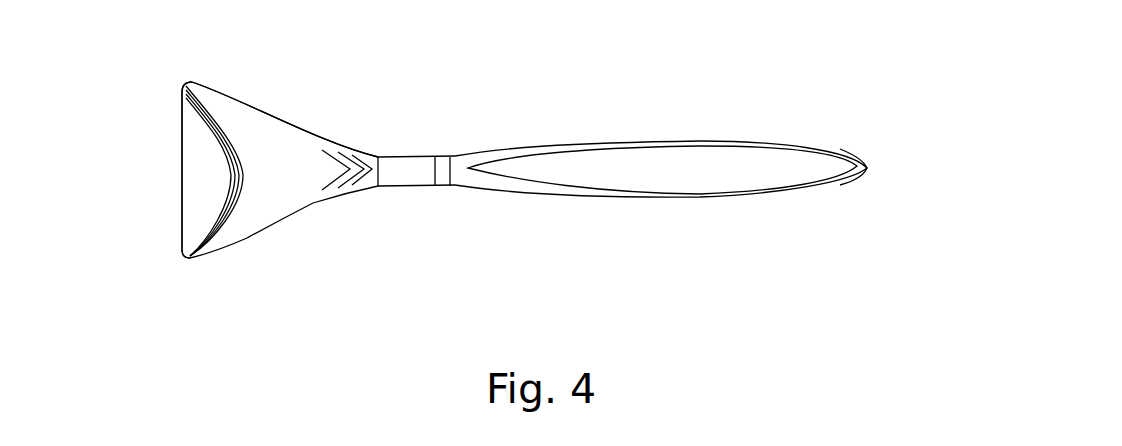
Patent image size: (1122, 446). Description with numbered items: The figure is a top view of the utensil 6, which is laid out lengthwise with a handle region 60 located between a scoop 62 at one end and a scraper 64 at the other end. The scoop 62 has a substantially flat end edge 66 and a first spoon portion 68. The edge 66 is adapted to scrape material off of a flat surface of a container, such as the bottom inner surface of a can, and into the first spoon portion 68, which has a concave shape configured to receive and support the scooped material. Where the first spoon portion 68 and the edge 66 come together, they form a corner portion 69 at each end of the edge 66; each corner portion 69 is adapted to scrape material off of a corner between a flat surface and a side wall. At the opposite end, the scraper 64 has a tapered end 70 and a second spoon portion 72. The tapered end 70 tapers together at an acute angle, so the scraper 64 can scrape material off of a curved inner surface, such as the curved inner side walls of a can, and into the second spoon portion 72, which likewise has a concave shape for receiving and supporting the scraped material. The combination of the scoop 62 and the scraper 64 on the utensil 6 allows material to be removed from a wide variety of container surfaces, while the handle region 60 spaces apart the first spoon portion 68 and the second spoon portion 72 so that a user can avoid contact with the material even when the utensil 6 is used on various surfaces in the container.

The utensil 6 is at (523, 178).
The handle region 60 is at (523, 178).
The scoop 62 is at (241, 178).
The scraper 64 is at (655, 223).
The end edge 66 is at (180, 210).
The first spoon portion 68 is at (282, 137).
The corner portion 69 is at (195, 80).
The tapered end 70 is at (886, 148).
The second spoon portion 72 is at (700, 165).